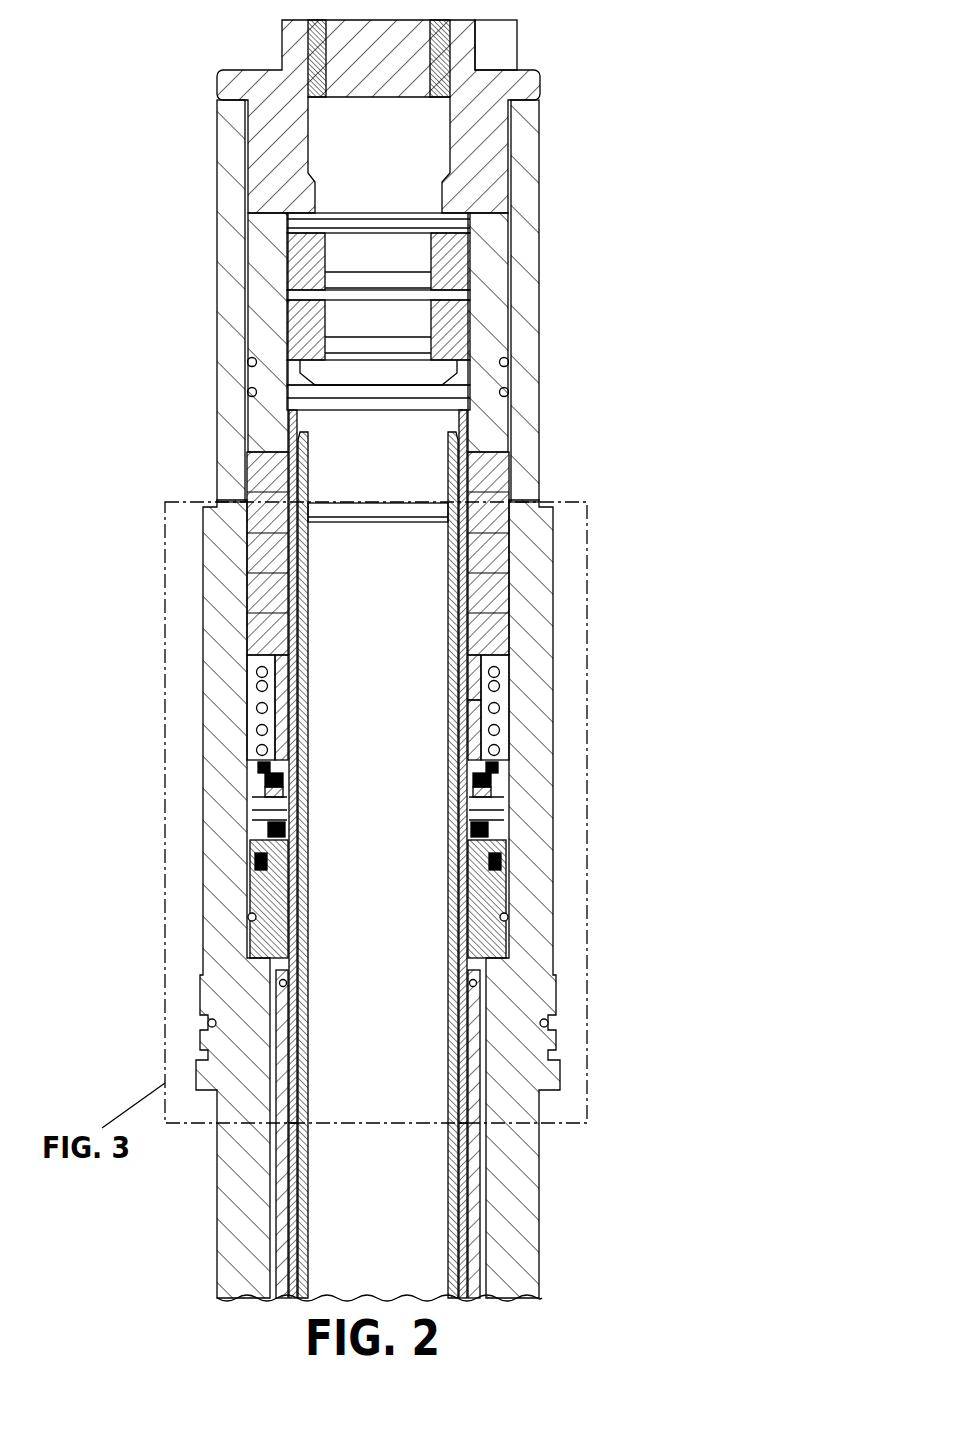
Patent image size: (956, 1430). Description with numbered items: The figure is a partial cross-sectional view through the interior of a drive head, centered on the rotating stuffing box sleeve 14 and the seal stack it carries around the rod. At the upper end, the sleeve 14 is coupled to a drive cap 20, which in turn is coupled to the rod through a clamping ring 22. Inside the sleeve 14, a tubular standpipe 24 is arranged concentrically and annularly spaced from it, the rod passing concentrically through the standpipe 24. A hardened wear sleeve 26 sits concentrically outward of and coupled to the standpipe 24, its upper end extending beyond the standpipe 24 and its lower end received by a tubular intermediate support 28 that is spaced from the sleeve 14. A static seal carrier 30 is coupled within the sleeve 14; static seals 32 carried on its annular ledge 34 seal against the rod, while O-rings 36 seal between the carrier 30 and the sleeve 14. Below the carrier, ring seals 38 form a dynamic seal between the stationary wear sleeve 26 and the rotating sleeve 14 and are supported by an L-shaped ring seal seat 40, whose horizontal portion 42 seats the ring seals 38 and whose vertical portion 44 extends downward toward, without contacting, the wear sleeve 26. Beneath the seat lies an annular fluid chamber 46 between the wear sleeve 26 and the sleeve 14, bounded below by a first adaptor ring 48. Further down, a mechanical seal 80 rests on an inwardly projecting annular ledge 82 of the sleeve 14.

The stuffing box sleeve 14 is at (228, 557).
The drive cap 20 is at (490, 88).
The clamping ring 22 is at (440, 52).
The tubular standpipe 24 is at (455, 442).
The hardened wear sleeve 26 is at (465, 477).
The tubular intermediate support 28 is at (472, 1183).
The static seal carrier 30 is at (492, 247).
The static seals 32 is at (450, 318).
The annular ledge 34 is at (440, 372).
The O-rings 36 is at (252, 362).
The ring seals 38 is at (492, 550).
The ring seal seat 40 is at (470, 655).
The horizontal portion 42 is at (493, 673).
The vertical portion 44 is at (477, 708).
The annular fluid chamber 46 is at (253, 693).
The first adaptor ring 48 is at (250, 768).
The mechanical seal 80 is at (482, 895).
The inwardly projecting annular ledge 82 is at (260, 967).